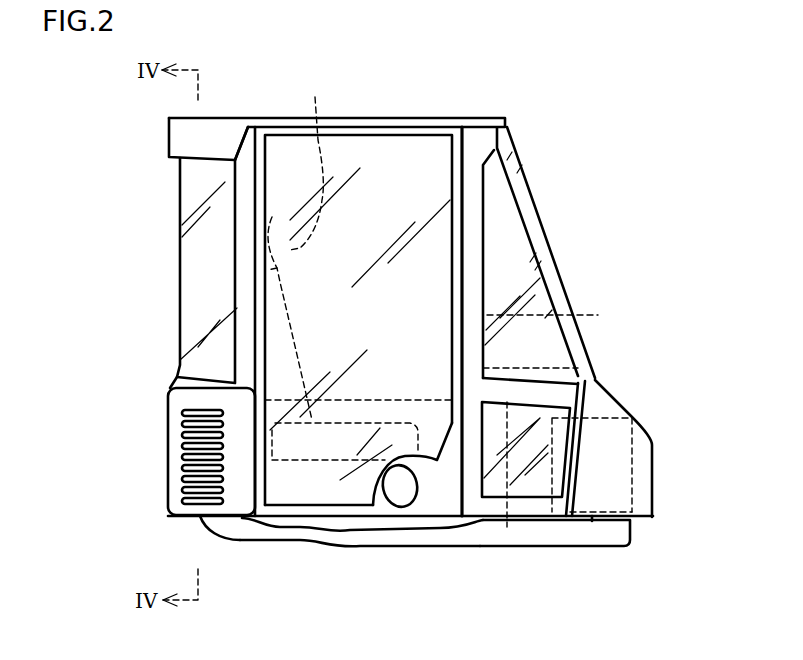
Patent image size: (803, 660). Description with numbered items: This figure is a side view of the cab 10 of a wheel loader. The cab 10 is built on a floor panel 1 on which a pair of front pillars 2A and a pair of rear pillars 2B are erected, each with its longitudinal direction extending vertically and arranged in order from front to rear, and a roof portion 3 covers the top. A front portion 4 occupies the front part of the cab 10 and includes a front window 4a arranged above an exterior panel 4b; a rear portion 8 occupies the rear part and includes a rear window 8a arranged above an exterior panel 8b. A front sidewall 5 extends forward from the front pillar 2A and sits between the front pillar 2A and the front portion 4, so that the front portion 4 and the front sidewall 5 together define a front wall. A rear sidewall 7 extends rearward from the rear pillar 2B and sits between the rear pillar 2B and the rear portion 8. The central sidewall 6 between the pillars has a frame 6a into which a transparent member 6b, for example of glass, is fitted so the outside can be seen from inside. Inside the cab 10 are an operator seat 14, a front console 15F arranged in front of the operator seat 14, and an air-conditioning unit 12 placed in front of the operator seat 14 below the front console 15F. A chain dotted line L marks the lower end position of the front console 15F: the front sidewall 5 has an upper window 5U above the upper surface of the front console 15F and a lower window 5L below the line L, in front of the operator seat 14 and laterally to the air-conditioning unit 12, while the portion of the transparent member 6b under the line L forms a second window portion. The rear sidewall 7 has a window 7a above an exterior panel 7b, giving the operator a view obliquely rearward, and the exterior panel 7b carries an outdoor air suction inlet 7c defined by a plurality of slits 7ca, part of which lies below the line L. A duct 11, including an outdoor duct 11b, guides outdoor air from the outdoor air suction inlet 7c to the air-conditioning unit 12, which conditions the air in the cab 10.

The floor panel 1 is at (297, 520).
The front pillar 2A is at (473, 478).
The rear pillar 2B is at (245, 350).
The roof portion 3 is at (380, 118).
The front portion 4 is at (560, 283).
The front window 4a is at (515, 180).
The exterior panel 4b is at (655, 488).
The front sidewall 5 is at (614, 323).
The upper window 5U is at (535, 338).
The lower window 5L is at (540, 452).
The central sidewall 6 is at (358, 518).
The frame 6a is at (428, 493).
The transparent member 6b is at (325, 477).
The rear sidewall 7 is at (187, 318).
The window 7a is at (193, 268).
The exterior panel 7b is at (205, 520).
The outdoor air suction inlet 7c is at (103, 403).
The slit 7ca is at (183, 414).
The rear portion 8 is at (177, 297).
The rear window 8a is at (180, 185).
The exterior panel 8b is at (167, 408).
The cab 10 is at (607, 227).
The duct 11 is at (557, 558).
The outdoor duct 11b is at (583, 538).
The air-conditioning unit 12 is at (633, 502).
The operator seat 14 is at (300, 245).
The front console 15F is at (507, 527).
The chain dotted line L is at (551, 315).